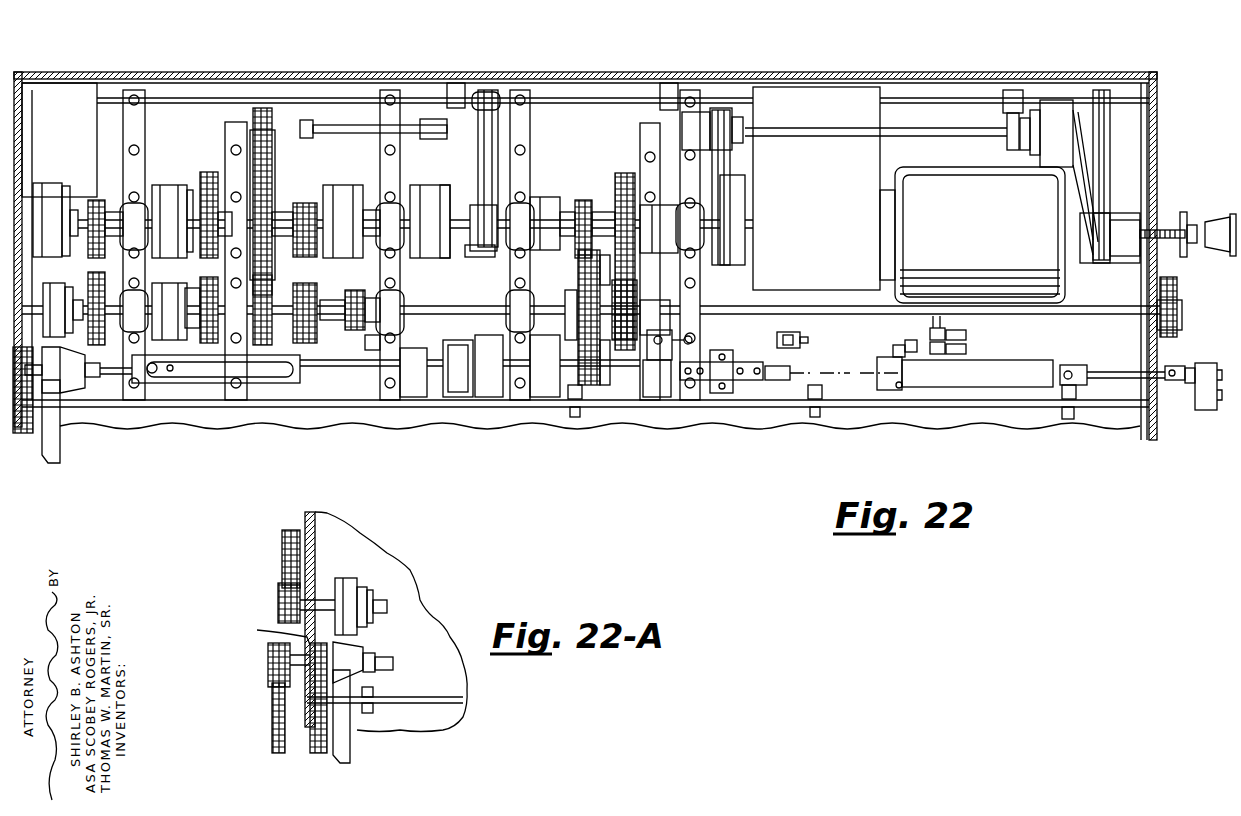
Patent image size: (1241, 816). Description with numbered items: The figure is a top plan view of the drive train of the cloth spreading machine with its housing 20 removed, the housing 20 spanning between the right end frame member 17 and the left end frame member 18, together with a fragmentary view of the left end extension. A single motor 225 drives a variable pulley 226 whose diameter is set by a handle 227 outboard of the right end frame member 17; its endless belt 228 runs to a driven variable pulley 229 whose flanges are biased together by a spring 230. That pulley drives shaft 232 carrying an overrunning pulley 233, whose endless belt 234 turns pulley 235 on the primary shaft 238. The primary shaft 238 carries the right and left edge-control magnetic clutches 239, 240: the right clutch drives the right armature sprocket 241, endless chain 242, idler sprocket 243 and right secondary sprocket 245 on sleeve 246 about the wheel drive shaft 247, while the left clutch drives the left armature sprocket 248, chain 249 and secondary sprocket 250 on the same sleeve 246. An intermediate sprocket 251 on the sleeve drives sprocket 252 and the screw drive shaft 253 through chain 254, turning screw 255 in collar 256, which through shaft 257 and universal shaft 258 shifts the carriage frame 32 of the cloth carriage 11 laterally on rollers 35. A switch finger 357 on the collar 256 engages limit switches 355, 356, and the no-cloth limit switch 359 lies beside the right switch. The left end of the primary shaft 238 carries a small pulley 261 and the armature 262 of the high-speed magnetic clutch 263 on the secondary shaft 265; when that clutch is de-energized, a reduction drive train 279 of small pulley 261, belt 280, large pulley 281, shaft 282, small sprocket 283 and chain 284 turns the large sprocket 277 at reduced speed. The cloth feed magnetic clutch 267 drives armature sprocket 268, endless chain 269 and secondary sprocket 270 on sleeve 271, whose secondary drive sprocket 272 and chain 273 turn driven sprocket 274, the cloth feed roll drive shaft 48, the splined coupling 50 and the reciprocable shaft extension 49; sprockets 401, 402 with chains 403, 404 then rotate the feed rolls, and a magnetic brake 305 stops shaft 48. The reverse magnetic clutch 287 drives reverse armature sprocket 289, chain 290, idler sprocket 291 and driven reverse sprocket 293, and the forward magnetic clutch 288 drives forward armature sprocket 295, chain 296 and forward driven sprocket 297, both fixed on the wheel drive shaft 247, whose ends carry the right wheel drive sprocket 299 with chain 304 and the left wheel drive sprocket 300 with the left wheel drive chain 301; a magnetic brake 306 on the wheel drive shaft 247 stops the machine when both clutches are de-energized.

In FIG. 22, the cloth carriage 11 is at (1208, 420).
In FIG. 22, the right end frame member 17 is at (1158, 112).
In FIG. 22, the left end frame member 18 is at (24, 112).
In FIG. 22-A, the left end frame member 18 is at (315, 535).
In FIG. 22, the drive train assembly housing 20 is at (598, 78).
In FIG. 22-A, the drive train assembly housing 20 is at (422, 602).
In FIG. 22, the carriage frame 32 is at (1207, 363).
In FIG. 22-A, the carriage frame 32 is at (350, 743).
In FIG. 22, the rollers or casters 35 is at (578, 418).
In FIG. 22-A, the rollers or casters 35 is at (373, 712).
In FIG. 22, the cloth feed roll drive shaft 48 is at (402, 368).
In FIG. 22, the shaft extension 49 is at (100, 372).
In FIG. 22-A, the shaft extension 49 is at (380, 657).
In FIG. 22, the splined telescoping coupling mechanism 50 is at (230, 383).
In FIG. 22, the motor 225 is at (990, 224).
In FIG. 22, the variable pulley 226 is at (1112, 265).
In FIG. 22, the handle 227 is at (1222, 228).
In FIG. 22, the endless belt 228 is at (1103, 205).
In FIG. 22, the driven variable pulley 229 is at (1108, 100).
In FIG. 22, the spring 230 is at (1075, 100).
In FIG. 22, the shaft 232 is at (855, 128).
In FIG. 22, the pulley 233 is at (740, 108).
In FIG. 22, the endless belt 234 is at (718, 115).
In FIG. 22, the pulley 235 is at (730, 205).
In FIG. 22, the primary shaft 238 is at (735, 240).
In FIG. 22, the right edge-control magnetic clutch 239 is at (660, 205).
In FIG. 22, the left edge-control magnetic clutch 240 is at (545, 197).
In FIG. 22, the right armature sprocket 241 is at (612, 265).
In FIG. 22, the endless chain 242 is at (633, 292).
In FIG. 22, the idler sprocket 243 is at (622, 173).
In FIG. 22, the right secondary sprocket 245 is at (692, 340).
In FIG. 22, the sleeve 246 is at (650, 310).
In FIG. 22, the wheel drive shaft 247 is at (1120, 314).
In FIG. 22-A, the wheel drive shaft 247 is at (383, 600).
In FIG. 22, the left armature sprocket 248 is at (583, 200).
In FIG. 22, the chain 249 is at (567, 272).
In FIG. 22, the secondary sprocket 250 is at (503, 365).
In FIG. 22, the intermediate sprocket 251 is at (600, 293).
In FIG. 22, the sprocket 252 is at (645, 362).
In FIG. 22, the screw drive shaft 253 is at (715, 393).
In FIG. 22, the chain 254 is at (605, 385).
In FIG. 22, the screw 255 is at (785, 380).
In FIG. 22, the collar 256 is at (889, 368).
In FIG. 22, the shaft 257 is at (1072, 365).
In FIG. 22, the universal shaft 258 is at (1125, 372).
In FIG. 22, the small pulley 261 is at (475, 252).
In FIG. 22, the armature 262 is at (447, 190).
In FIG. 22, the high-speed magnetic clutch 263 is at (422, 190).
In FIG. 22, the secondary shaft 265 is at (370, 210).
In FIG. 22, the cloth feed magnetic clutch 267 is at (345, 185).
In FIG. 22, the armature sprocket 268 is at (296, 210).
In FIG. 22, the endless chain 269 is at (305, 284).
In FIG. 22, the secondary sprocket 270 is at (330, 320).
In FIG. 22, the sleeve 271 is at (333, 320).
In FIG. 22, the secondary drive sprocket 272 is at (358, 303).
In FIG. 22, the chain 273 is at (372, 350).
In FIG. 22, the driven sprocket 274 is at (355, 330).
In FIG. 22, the large sprocket 277 is at (272, 182).
In FIG. 22, the reduction drive train 279 is at (353, 98).
In FIG. 22, the belt 280 is at (497, 100).
In FIG. 22, the large pulley 281 is at (483, 90).
In FIG. 22, the shaft 282 is at (412, 125).
In FIG. 22, the small sprocket 283 is at (265, 108).
In FIG. 22, the chain 284 is at (264, 152).
In FIG. 22, the reverse magnetic clutch 287 is at (165, 190).
In FIG. 22, the forward magnetic clutch 288 is at (55, 183).
In FIG. 22, the reverse armature sprocket 289 is at (236, 270).
In FIG. 22, the chain 290 is at (197, 278).
In FIG. 22, the idler sprocket 291 is at (212, 166).
In FIG. 22, the driven reverse sprocket 293 is at (215, 328).
In FIG. 22, the forward armature sprocket 295 is at (95, 200).
In FIG. 22, the chain 296 is at (80, 258).
In FIG. 22, the forward driven sprocket 297 is at (108, 325).
In FIG. 22, the right wheel drive sprocket 299 is at (1182, 316).
In FIG. 22-A, the left wheel drive sprocket 300 is at (278, 600).
In FIG. 22-A, the left wheel drive chain 301 is at (282, 550).
In FIG. 22, the chain 304 is at (1178, 290).
In FIG. 22, the magnetic brake 305 is at (460, 378).
In FIG. 22, the magnetic brake 306 is at (65, 337).
In FIG. 22-A, the magnetic brake 306 is at (345, 590).
In FIG. 22, the limit switch 355 is at (790, 332).
In FIG. 22, the limit switch 356 is at (968, 334).
In FIG. 22, the switch finger 357 is at (905, 332).
In FIG. 22, the no-cloth limit switch 359 is at (968, 349).
In FIG. 22, the sprocket 401 is at (35, 375).
In FIG. 22-A, the sprocket 401 is at (257, 630).
In FIG. 22-A, the sprocket 402 is at (270, 673).
In FIG. 22, the chain 403 is at (25, 433).
In FIG. 22-A, the chain 403 is at (322, 753).
In FIG. 22-A, the chain 404 is at (272, 735).